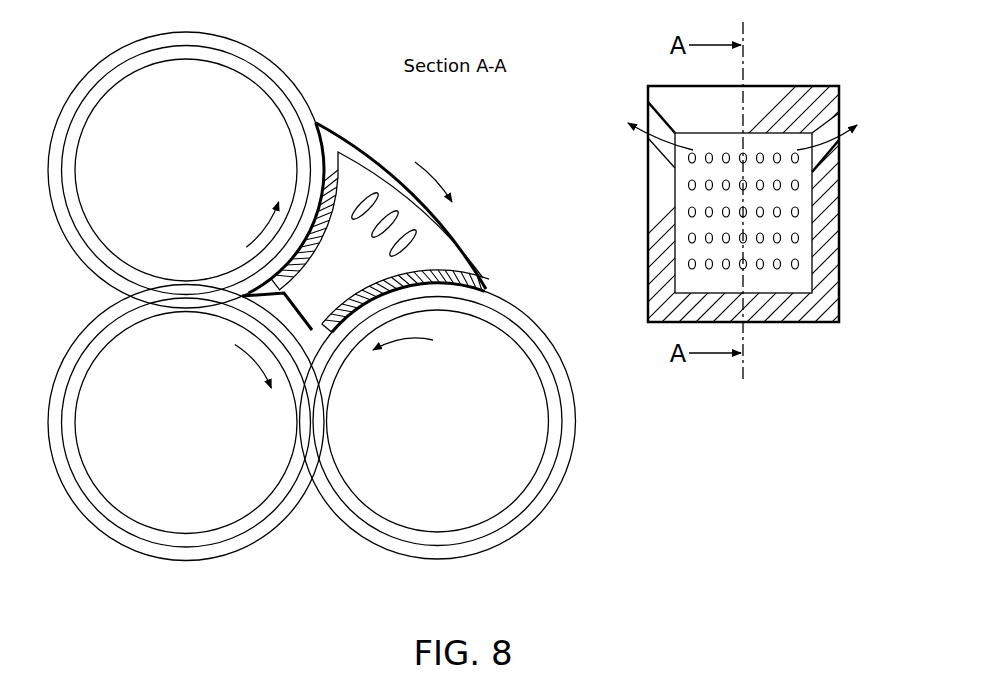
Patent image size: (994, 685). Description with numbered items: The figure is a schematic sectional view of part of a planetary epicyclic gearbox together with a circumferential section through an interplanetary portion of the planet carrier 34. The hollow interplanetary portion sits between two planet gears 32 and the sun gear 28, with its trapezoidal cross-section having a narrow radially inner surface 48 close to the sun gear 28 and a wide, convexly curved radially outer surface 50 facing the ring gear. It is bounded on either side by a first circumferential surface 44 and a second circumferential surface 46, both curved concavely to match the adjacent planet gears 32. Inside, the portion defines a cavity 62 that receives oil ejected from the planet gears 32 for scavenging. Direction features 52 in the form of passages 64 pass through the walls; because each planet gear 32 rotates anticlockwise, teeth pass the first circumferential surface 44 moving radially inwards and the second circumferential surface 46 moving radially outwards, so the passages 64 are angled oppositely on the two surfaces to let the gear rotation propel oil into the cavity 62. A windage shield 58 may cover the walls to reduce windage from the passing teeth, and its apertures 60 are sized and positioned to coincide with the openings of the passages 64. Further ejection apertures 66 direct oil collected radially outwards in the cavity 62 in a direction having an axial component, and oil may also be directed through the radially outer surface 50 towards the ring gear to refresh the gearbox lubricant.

The sun gear 28 is at (199, 461).
The planet gear 32 is at (154, 186).
The planet carrier 34 is at (488, 292).
The first circumferential surface 44 is at (390, 292).
The second circumferential surface 46 is at (293, 258).
The radially inner surface 48 is at (280, 320).
The radially outer surface 50 is at (357, 150).
The direction features 52 is at (405, 288).
The windage shield 58 is at (688, 222).
The apertures 60 is at (798, 185).
The cavity 62 is at (332, 272).
The passages 64 is at (323, 197).
The ejection apertures 66 is at (370, 193).